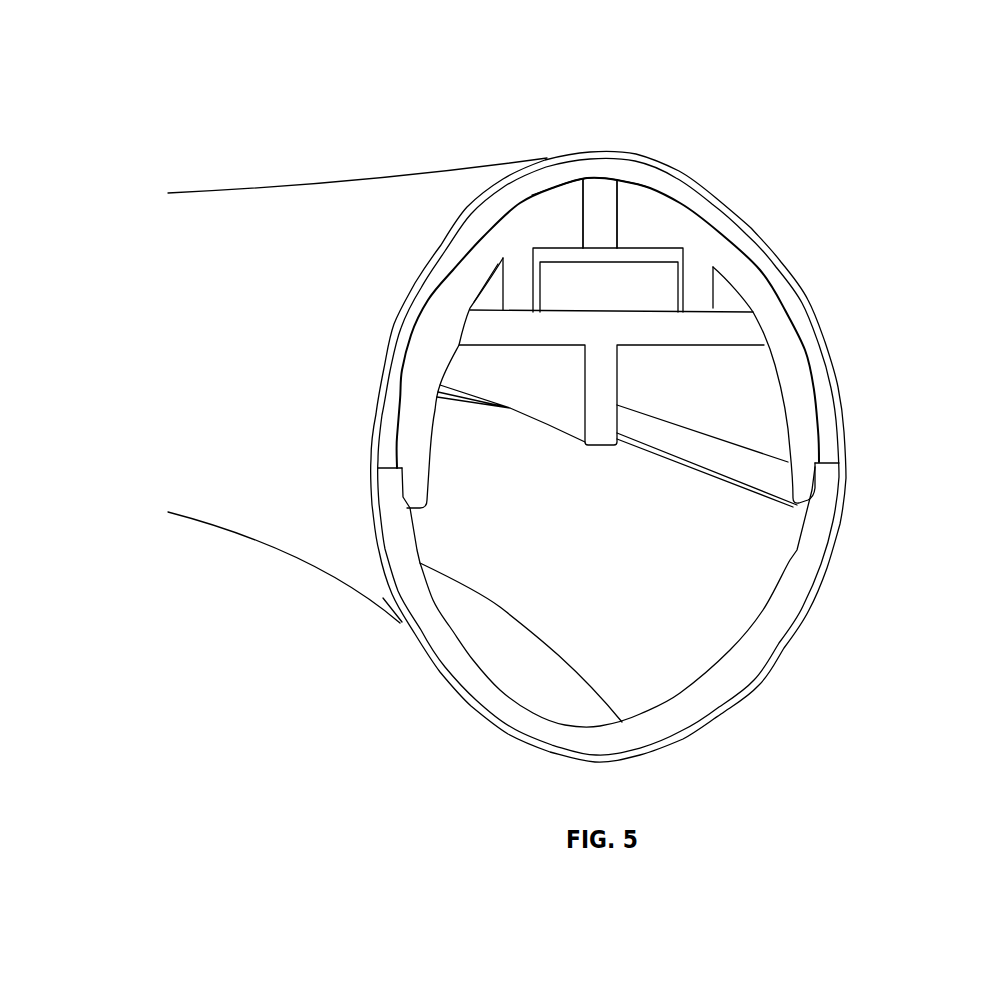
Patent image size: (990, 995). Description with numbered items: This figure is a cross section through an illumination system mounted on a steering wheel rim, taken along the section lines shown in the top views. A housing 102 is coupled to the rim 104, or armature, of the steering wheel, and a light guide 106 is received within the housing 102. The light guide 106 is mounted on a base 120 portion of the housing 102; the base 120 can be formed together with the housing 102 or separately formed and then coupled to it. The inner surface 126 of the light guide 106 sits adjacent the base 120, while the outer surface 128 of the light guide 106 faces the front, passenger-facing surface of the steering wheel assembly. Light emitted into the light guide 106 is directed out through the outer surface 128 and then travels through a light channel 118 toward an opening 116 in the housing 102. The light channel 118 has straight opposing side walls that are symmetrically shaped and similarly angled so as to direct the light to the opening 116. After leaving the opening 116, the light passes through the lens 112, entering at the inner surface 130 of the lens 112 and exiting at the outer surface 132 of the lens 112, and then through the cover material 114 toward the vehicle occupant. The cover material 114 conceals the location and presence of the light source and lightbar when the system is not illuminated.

The housing 102 is at (788, 362).
The rim 104 is at (708, 597).
The light guide 106 is at (593, 283).
The lens 112 is at (508, 197).
The cover material 114 is at (463, 212).
The opening 116 is at (612, 182).
The light channel 118 is at (603, 215).
The base 120 is at (683, 325).
The inner surface 126 is at (632, 312).
The outer surface 128 is at (633, 260).
The inner surface 130 is at (562, 182).
The outer surface 132 is at (592, 155).